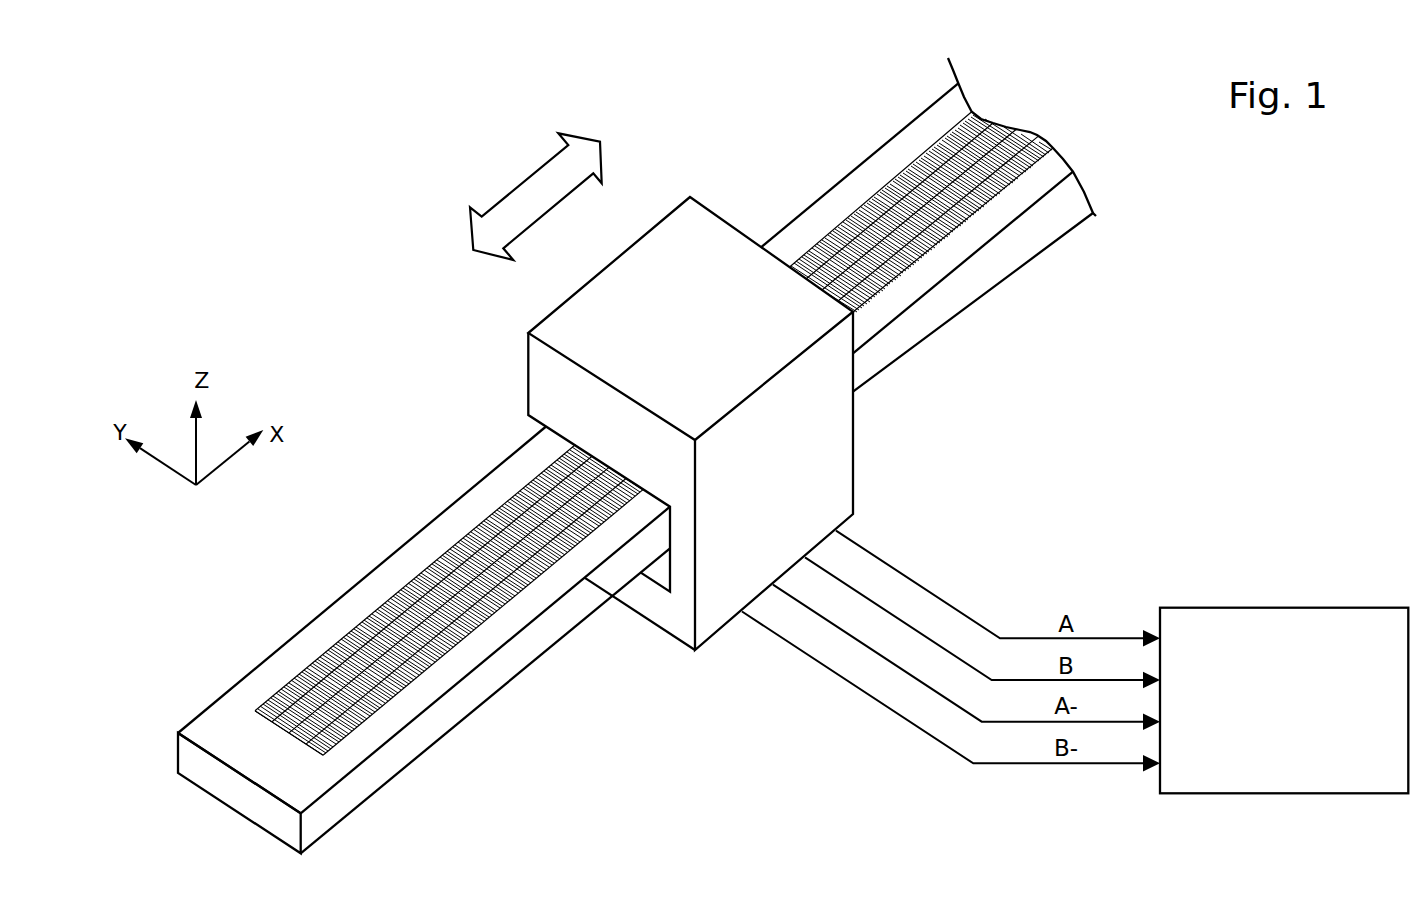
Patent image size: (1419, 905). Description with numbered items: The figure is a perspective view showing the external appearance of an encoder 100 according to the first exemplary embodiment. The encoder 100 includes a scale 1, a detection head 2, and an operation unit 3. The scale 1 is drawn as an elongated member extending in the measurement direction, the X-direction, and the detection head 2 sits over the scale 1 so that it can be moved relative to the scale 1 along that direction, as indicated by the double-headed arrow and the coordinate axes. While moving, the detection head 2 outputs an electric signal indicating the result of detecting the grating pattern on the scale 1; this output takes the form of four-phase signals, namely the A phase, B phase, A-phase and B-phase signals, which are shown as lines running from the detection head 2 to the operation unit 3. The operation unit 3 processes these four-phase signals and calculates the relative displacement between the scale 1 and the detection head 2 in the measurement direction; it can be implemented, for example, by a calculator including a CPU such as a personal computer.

The encoder 100 is at (295, 198).
The scale 1 is at (224, 716).
The detection head 2 is at (712, 235).
The operation unit 3 is at (1283, 608).